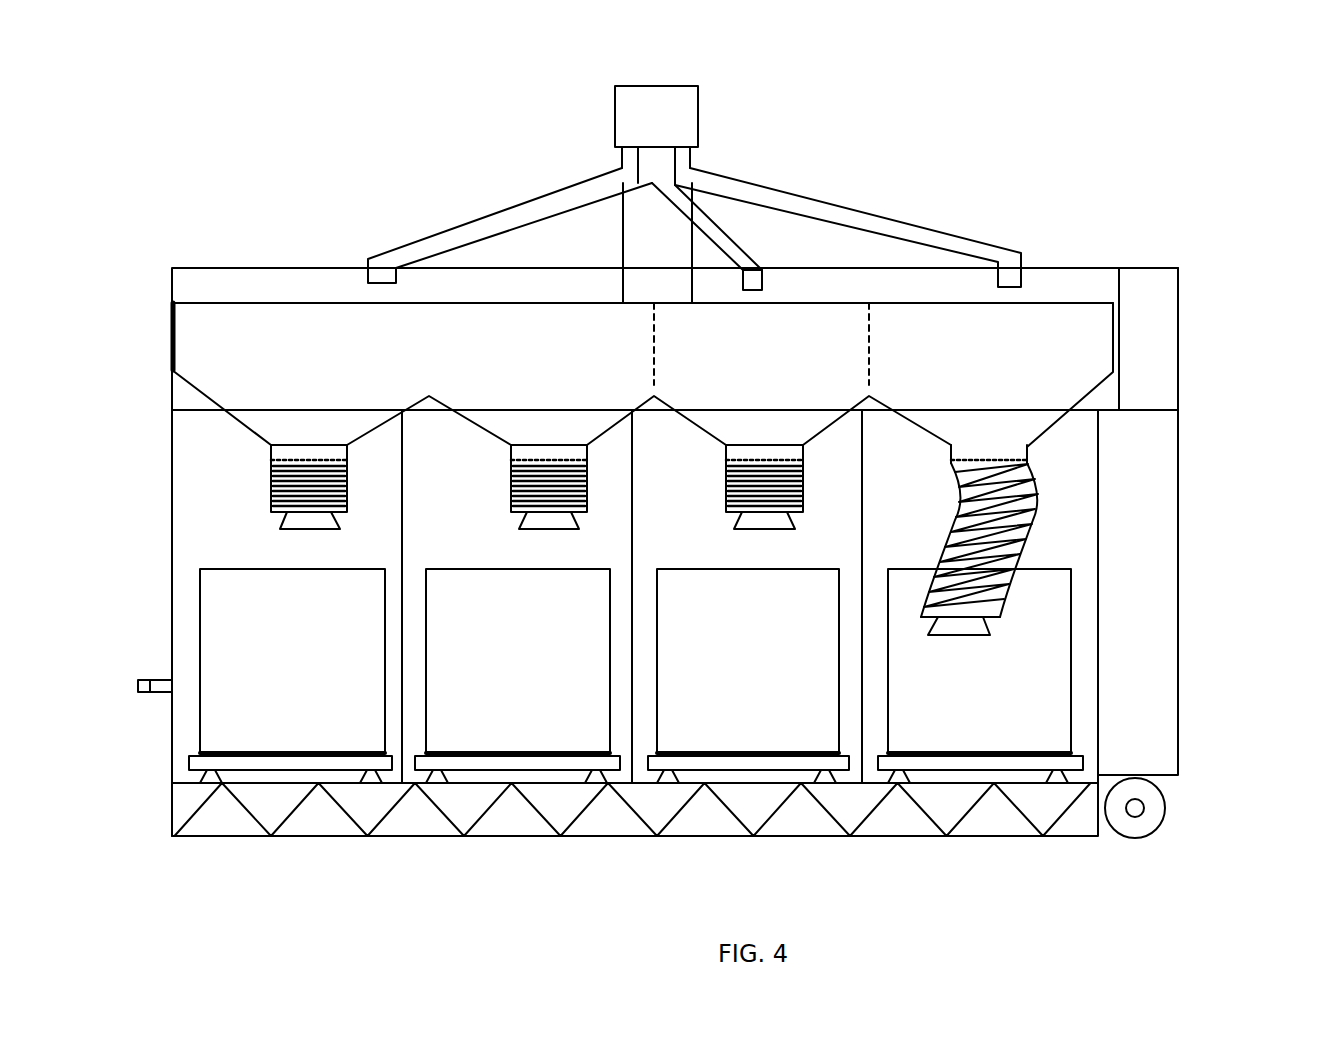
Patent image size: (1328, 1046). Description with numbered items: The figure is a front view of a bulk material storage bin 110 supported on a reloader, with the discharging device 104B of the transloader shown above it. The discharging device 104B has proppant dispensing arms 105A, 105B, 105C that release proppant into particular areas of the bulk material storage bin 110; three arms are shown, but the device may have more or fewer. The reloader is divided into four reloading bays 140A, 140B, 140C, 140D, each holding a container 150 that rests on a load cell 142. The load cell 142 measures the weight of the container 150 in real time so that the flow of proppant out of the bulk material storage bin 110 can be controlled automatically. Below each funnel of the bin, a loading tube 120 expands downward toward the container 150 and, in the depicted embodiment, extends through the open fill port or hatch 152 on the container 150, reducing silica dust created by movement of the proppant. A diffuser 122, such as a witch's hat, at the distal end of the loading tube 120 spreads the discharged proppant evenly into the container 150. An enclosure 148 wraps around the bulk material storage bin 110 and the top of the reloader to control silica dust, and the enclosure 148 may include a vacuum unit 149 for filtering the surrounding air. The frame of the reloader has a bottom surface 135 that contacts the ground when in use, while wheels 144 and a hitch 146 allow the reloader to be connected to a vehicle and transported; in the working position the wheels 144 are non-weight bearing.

The discharging device 104B is at (740, 127).
The proppant dispensing arm 105A is at (516, 205).
The proppant dispensing arm 105B is at (727, 235).
The proppant dispensing arm 105C is at (772, 193).
The bulk material storage bin 110 is at (1082, 292).
The loading tube 120 is at (1042, 503).
The diffuser 122 is at (988, 635).
The bottom surface 135 is at (585, 836).
The reloading bay 140A is at (208, 522).
The reloading bay 140B is at (428, 484).
The reloading bay 140C is at (844, 460).
The reloading bay 140D is at (1112, 565).
The load cell 142 is at (298, 770).
The wheels 144 is at (1165, 808).
The hitch 146 is at (138, 686).
The enclosure 148 is at (172, 382).
The vacuum unit 149 is at (1176, 378).
The container 150 is at (316, 710).
The fill port or hatch 152 is at (1013, 570).